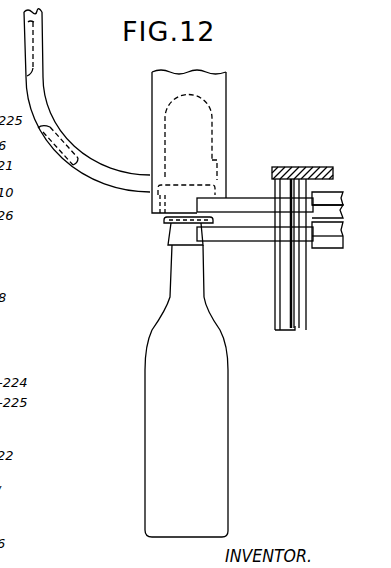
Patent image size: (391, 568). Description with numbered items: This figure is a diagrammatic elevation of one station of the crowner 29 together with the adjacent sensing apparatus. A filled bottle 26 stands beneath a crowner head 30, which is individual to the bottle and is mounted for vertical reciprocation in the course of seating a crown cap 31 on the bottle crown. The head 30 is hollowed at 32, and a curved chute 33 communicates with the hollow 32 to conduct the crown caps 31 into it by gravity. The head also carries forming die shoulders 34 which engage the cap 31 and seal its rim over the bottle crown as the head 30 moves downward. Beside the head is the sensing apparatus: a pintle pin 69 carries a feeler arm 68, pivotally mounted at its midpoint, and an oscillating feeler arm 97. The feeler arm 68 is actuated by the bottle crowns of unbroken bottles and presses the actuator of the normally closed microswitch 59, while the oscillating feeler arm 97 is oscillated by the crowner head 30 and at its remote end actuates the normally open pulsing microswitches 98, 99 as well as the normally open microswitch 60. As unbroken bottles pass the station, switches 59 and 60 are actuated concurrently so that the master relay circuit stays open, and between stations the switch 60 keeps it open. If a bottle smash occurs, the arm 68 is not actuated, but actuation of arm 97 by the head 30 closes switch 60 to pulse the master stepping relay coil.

The bottle 26 is at (145, 403).
The crowner 29 is at (218, 88).
The head 30 is at (220, 160).
The crown cap 31 is at (63, 138).
The hollow 32 is at (200, 132).
The chute 33 is at (37, 89).
The forming die shoulders 34 is at (165, 185).
The microswitch 59 is at (327, 240).
The microswitch 60 is at (343, 214).
The feeler arm 68 is at (245, 238).
The pintle pin 69 is at (282, 306).
The oscillating feeler arm 97 is at (250, 203).
The pulsing microswitch 98 is at (300, 167).
The pulsing microswitch 99 is at (322, 194).